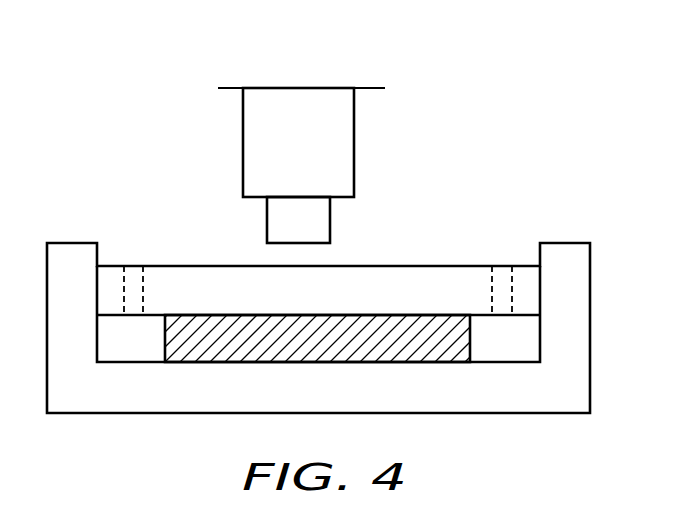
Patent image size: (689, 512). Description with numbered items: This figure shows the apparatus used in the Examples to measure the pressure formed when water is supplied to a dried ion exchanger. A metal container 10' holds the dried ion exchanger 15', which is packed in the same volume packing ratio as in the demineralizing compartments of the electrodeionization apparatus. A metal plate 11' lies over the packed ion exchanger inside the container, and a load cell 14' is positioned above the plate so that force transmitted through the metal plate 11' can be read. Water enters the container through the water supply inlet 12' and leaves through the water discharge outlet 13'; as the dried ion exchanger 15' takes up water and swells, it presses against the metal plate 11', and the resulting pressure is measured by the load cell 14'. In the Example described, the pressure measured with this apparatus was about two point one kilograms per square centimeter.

The metal container 10' is at (331, 286).
The metal plate 11' is at (318, 252).
The water supply inlet 12' is at (505, 237).
The water discharge outlet 13' is at (135, 236).
The load cell 14' is at (301, 132).
The dried ion exchanger 15' is at (316, 363).